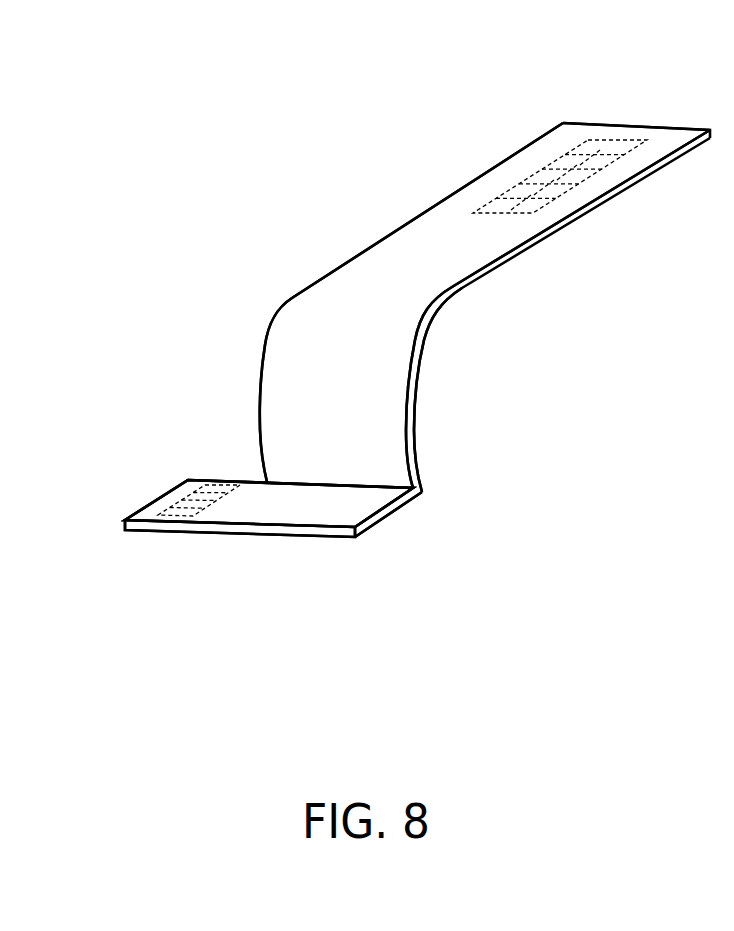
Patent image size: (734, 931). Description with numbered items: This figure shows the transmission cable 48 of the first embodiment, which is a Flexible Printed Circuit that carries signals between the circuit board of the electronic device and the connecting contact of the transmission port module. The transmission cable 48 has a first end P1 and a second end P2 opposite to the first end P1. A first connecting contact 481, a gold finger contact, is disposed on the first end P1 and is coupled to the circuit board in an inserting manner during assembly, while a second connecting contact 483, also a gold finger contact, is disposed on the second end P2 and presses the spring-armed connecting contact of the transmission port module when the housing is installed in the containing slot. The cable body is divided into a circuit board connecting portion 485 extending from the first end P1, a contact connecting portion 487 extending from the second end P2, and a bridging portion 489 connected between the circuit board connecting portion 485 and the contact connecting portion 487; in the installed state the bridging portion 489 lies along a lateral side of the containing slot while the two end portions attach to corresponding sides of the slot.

The transmission cable 48 is at (192, 104).
The first connecting contact 481 is at (178, 510).
The second connecting contact 483 is at (498, 205).
The circuit board connecting portion 485 is at (328, 517).
The contact connecting portion 487 is at (435, 243).
The bridging portion 489 is at (392, 397).
The first end P1 is at (255, 512).
The second end P2 is at (548, 151).